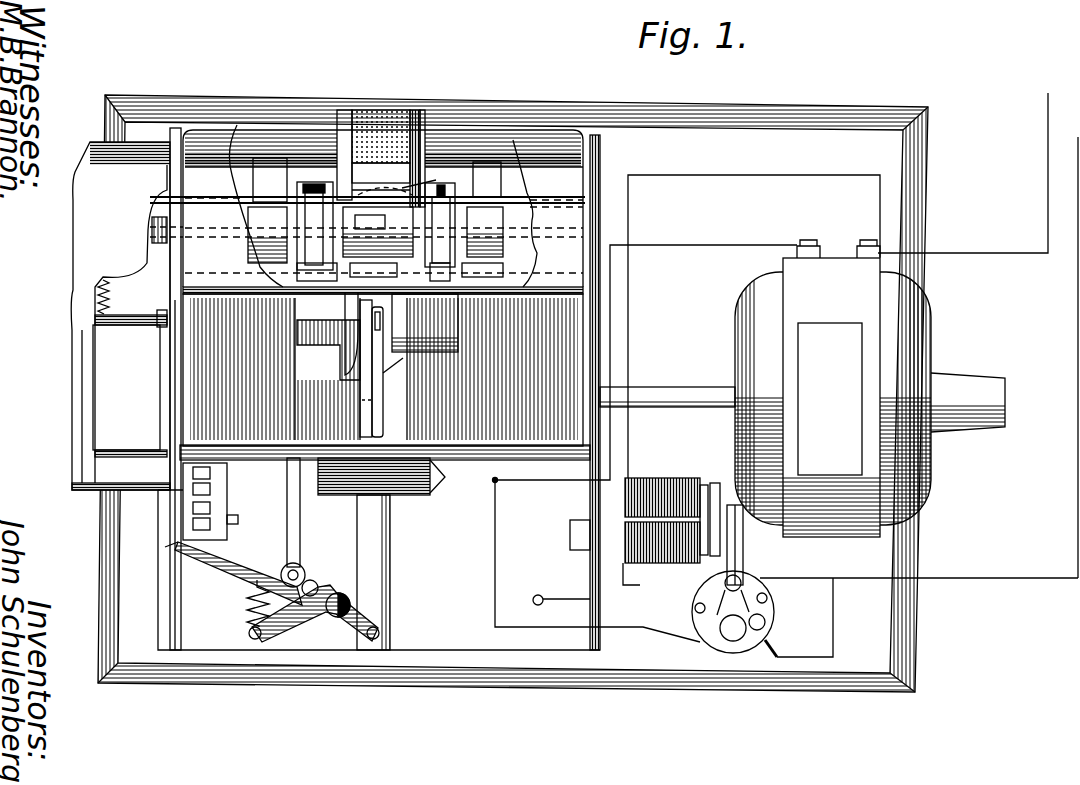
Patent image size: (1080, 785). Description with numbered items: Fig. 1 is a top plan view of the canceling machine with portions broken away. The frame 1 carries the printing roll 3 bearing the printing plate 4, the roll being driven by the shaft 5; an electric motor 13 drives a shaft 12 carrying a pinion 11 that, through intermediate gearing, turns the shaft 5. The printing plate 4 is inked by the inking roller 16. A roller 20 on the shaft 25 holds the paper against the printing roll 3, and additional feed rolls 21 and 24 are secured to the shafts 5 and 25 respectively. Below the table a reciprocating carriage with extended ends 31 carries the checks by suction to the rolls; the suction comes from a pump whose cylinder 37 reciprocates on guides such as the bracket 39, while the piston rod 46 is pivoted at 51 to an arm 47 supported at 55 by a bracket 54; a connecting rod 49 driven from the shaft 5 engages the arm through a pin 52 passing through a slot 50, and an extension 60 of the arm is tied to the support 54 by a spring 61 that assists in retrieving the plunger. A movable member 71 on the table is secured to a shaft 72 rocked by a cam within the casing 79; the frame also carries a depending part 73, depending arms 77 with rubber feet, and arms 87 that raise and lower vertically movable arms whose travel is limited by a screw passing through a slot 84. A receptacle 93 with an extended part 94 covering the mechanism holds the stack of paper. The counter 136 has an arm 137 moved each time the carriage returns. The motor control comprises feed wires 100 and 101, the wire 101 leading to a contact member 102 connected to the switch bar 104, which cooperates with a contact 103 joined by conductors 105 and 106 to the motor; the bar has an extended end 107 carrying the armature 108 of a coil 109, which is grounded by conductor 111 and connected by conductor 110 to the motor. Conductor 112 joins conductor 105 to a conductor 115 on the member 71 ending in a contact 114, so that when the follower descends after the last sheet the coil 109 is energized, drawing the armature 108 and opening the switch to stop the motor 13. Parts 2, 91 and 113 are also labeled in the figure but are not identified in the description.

The frame 1 is at (600, 165).
The pinion 11 is at (172, 138).
The casing 2 is at (772, 138).
The printing roll 3 is at (412, 170).
The printing plate 4 is at (402, 188).
The shaft 5 is at (288, 230).
The shaft 12 is at (490, 287).
The electric motor 13 is at (493, 437).
The inking roller 16 is at (386, 128).
The roller 20 is at (378, 232).
The feed rolls 21 is at (268, 160).
The feed rolls 24 is at (270, 215).
The shaft 25 is at (245, 192).
The extended ends 31 is at (325, 195).
The pump cylinder 37 is at (405, 498).
The bracket 39 is at (178, 528).
The piston rod 46 is at (390, 580).
The arm 47 is at (350, 622).
The connecting rod 49 is at (297, 537).
The slot 50 is at (309, 582).
The pivot connection 51 is at (380, 632).
The pin 52 is at (297, 565).
The bracket 54 is at (255, 557).
The pivot 55 is at (337, 594).
The extension 60 is at (265, 627).
The spring 61 is at (247, 607).
The movable member 71 is at (400, 423).
The shaft 72 is at (125, 452).
The depending part 73 is at (322, 282).
The depending arms 77 is at (507, 272).
The casing 79 is at (55, 366).
The slot 84 is at (335, 333).
The arms 87 is at (422, 222).
The spring 91 is at (112, 293).
The receptacle 93 is at (248, 290).
The extended part 94 is at (222, 140).
The feed wire 100 is at (1048, 220).
The feed wire 101 is at (1078, 160).
The contact member 102 is at (765, 620).
The contact 103 is at (708, 635).
The switch bar 104 is at (762, 584).
The conductor 105 is at (643, 628).
The conductor 106 is at (552, 478).
The extended end 107 is at (745, 552).
The armature 108 is at (713, 486).
The coil 109 is at (653, 490).
The conductor 110 is at (771, 177).
The conductor 111 is at (651, 578).
The conductor 112 is at (447, 523).
The lever 113 is at (378, 400).
The contact 114 is at (383, 318).
The conductor 115 is at (390, 370).
The counter 136 is at (202, 540).
The arm 137 is at (233, 516).